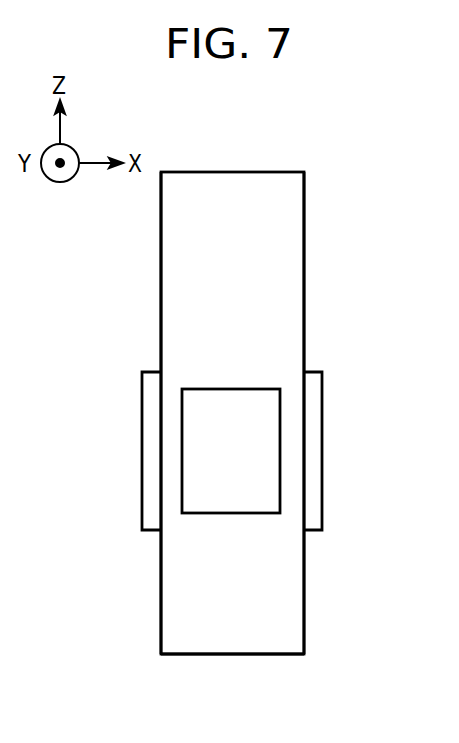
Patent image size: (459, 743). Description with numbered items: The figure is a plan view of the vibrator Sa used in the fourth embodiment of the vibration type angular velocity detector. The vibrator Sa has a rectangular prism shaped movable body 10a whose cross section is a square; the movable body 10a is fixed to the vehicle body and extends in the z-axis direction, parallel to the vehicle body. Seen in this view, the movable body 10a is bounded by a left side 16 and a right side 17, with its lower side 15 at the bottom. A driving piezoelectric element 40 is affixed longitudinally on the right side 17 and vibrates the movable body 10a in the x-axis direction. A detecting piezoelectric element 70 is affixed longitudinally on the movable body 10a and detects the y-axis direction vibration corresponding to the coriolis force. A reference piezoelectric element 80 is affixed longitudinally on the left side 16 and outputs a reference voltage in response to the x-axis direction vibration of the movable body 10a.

The movable body 10a is at (316, 187).
The lower side 15 is at (224, 638).
The left side 16 is at (161, 263).
The right side 17 is at (305, 261).
The driving piezoelectric element 40 is at (322, 450).
The detecting piezoelectric element 70 is at (230, 503).
The reference piezoelectric element 80 is at (142, 450).
The vibrator Sa is at (315, 648).